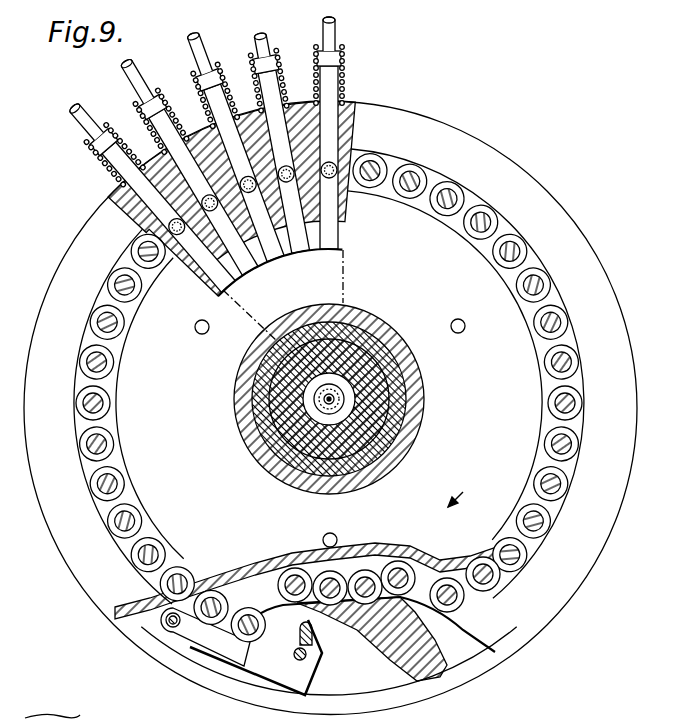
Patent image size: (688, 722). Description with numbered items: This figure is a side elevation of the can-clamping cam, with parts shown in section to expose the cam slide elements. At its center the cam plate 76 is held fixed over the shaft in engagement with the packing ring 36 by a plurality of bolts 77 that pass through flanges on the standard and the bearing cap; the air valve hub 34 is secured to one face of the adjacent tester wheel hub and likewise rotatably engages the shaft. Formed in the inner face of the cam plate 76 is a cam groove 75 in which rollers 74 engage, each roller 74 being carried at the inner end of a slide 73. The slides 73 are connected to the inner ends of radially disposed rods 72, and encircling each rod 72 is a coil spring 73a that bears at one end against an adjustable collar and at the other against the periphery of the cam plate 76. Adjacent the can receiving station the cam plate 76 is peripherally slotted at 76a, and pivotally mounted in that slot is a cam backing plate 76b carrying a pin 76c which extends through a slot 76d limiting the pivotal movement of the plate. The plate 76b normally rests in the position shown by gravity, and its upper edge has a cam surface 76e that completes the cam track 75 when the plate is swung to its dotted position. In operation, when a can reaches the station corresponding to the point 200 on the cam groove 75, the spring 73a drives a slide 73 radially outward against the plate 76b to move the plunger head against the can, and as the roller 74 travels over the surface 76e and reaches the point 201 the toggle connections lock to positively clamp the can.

The packing ring 36 is at (400, 388).
The rod 72 is at (151, 196).
The slide 73 is at (224, 198).
The coil spring 73a is at (95, 160).
The roller 74 is at (131, 251).
The cam groove 75 is at (78, 382).
The cam plate 76 is at (330, 408).
The peripheral slot 76a is at (348, 688).
The cam backing plate 76b is at (273, 675).
The pin 76c is at (307, 656).
The slot 76d is at (313, 637).
The cam surface 76e is at (242, 657).
The bolt 77 is at (201, 334).
The point on cam groove 200 is at (362, 624).
The point on cam track 201 is at (202, 646).
The air valve hub 34 is at (64, 713).